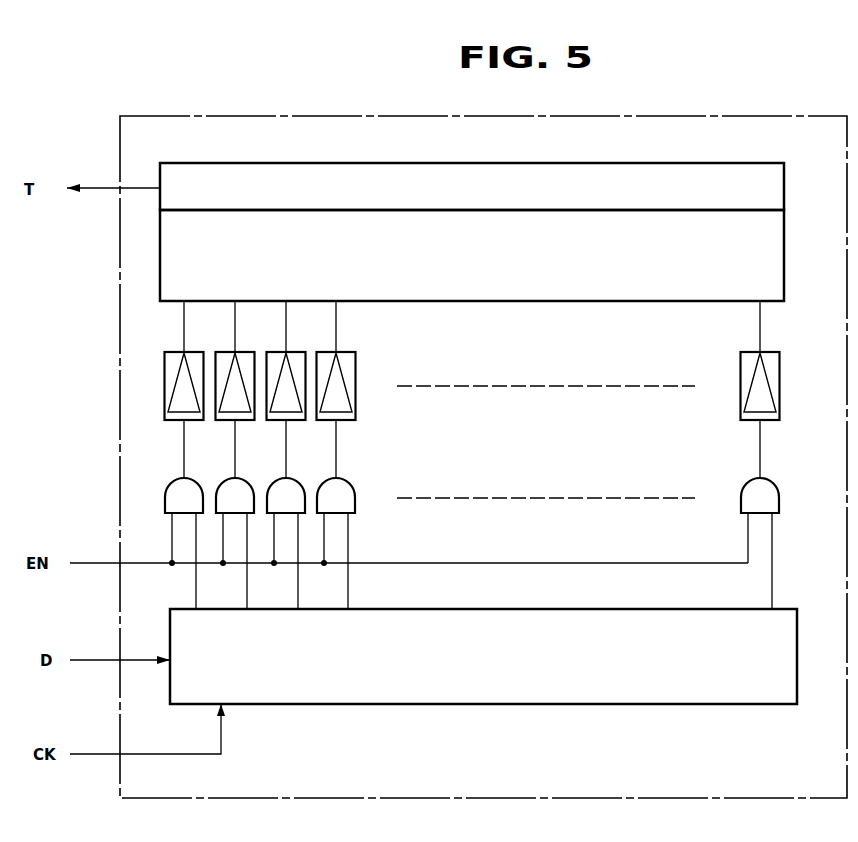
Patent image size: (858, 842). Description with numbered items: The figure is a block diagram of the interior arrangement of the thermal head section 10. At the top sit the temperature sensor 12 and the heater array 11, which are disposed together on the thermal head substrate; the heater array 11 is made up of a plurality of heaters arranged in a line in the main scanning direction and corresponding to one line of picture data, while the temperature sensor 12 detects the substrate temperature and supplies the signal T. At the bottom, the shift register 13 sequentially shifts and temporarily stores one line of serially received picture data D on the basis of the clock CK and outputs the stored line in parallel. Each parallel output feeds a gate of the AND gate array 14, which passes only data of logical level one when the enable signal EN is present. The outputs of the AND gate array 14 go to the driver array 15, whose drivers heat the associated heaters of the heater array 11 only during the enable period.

The thermal head section 10 is at (712, 116).
The heater array 11 is at (784, 238).
The temperature sensor 12 is at (784, 182).
The shift register 13 is at (688, 704).
The AND gate array 14 is at (795, 511).
The driver array 15 is at (796, 402).